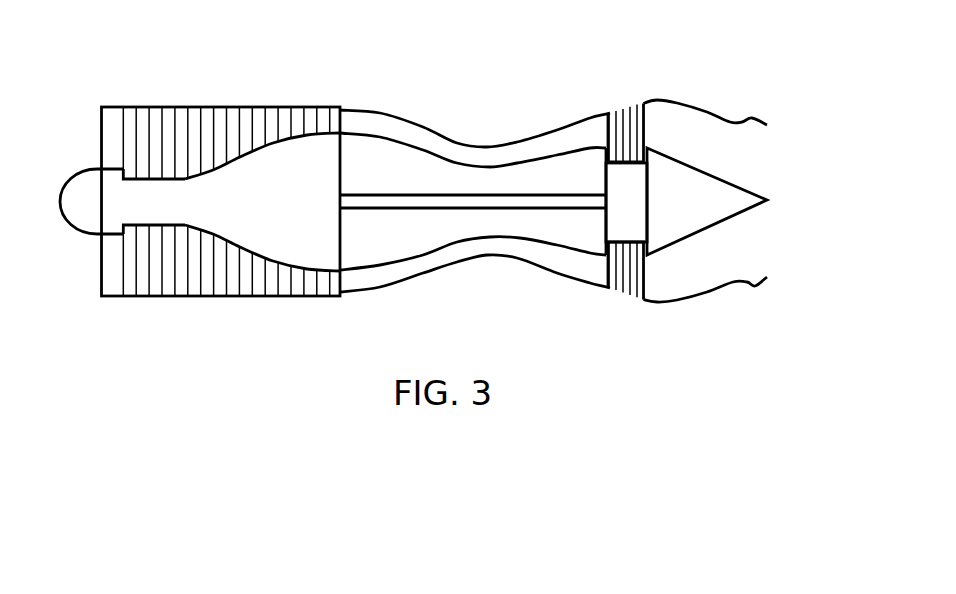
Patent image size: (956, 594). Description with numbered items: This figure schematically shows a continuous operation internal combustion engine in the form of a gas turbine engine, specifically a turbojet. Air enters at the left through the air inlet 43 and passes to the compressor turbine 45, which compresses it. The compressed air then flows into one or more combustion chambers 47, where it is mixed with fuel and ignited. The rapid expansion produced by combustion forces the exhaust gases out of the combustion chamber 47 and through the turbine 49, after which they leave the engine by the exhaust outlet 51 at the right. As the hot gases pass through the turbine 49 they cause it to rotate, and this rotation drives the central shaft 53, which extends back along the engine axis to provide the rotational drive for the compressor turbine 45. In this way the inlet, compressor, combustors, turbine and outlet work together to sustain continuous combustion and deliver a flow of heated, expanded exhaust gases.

The air inlet 43 is at (100, 270).
The compressor turbine 45 is at (247, 277).
The combustion chamber 47 is at (550, 260).
The turbine 49 is at (243, 78).
The exhaust outlet 51 is at (758, 242).
The shaft 53 is at (480, 205).